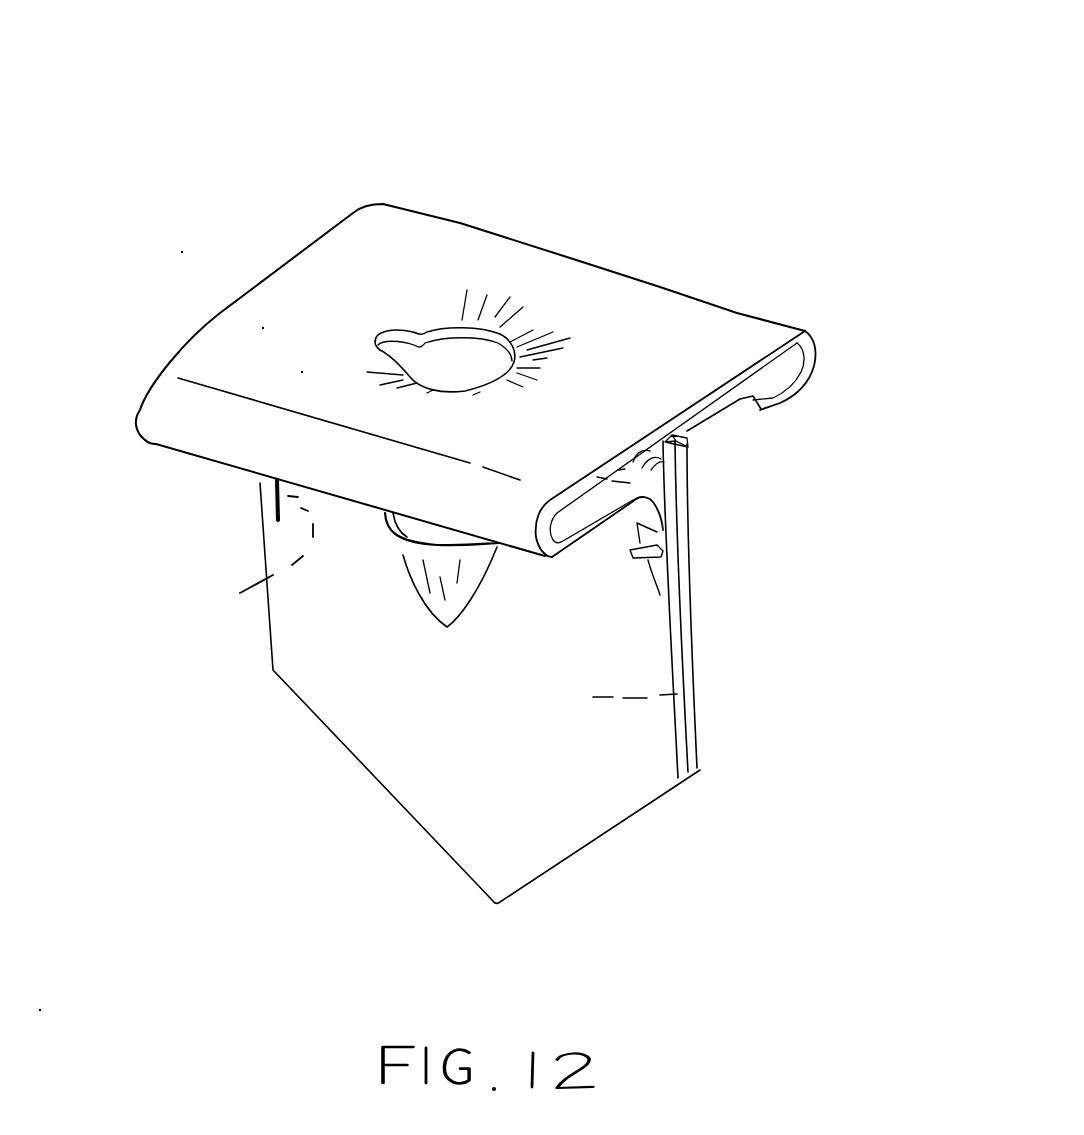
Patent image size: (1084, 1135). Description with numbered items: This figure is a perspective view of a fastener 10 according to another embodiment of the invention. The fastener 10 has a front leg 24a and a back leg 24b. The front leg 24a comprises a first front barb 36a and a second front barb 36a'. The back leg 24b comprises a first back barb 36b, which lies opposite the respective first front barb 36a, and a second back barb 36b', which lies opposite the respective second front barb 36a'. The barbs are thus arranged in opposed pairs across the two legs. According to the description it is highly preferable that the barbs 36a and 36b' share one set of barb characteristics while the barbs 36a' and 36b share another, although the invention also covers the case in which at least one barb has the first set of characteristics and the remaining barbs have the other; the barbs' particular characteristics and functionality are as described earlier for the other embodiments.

The fastener 10 is at (588, 173).
The front leg 24a is at (480, 695).
The back leg 24b is at (750, 609).
The first front barb 36a is at (755, 550).
The first back barb 36b is at (697, 444).
The second front barb 36a' is at (169, 508).
The second back barb 36b' is at (184, 576).